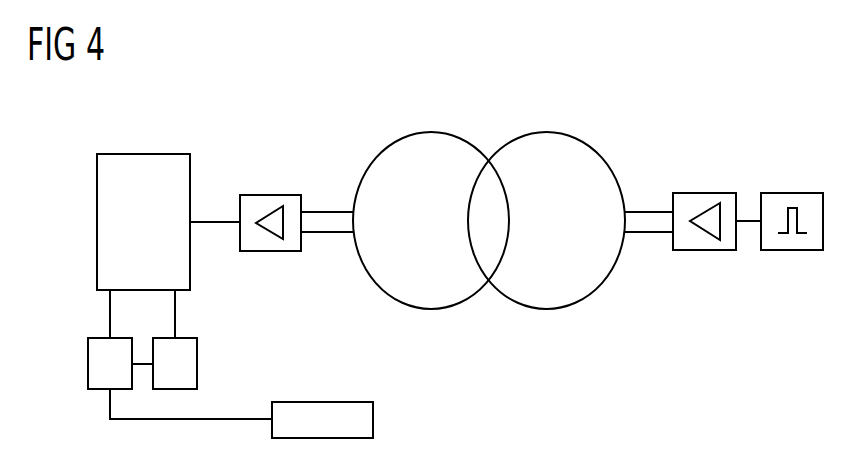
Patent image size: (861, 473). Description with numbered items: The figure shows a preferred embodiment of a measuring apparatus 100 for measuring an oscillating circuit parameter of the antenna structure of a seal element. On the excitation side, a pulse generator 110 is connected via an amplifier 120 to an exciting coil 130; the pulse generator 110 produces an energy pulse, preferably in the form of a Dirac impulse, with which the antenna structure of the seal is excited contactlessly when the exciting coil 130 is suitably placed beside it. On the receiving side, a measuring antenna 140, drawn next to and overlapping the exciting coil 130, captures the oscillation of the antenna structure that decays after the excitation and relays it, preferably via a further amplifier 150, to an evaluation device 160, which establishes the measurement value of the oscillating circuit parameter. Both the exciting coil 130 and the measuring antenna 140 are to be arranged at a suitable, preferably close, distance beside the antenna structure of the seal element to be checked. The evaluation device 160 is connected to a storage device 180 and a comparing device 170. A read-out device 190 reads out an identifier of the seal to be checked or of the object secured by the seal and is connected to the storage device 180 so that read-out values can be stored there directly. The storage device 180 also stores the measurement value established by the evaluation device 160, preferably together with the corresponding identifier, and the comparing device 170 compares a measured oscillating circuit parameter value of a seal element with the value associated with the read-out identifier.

The measuring apparatus 100 is at (622, 98).
The pulse generator 110 is at (793, 193).
The amplifier 120 is at (705, 193).
The exciting coil 130 is at (547, 309).
The measuring antenna 140 is at (428, 309).
The amplifier 150 is at (272, 195).
The evaluation device 160 is at (146, 154).
The comparing device 170 is at (197, 364).
The storage device 180 is at (88, 364).
The read-out device 190 is at (373, 419).